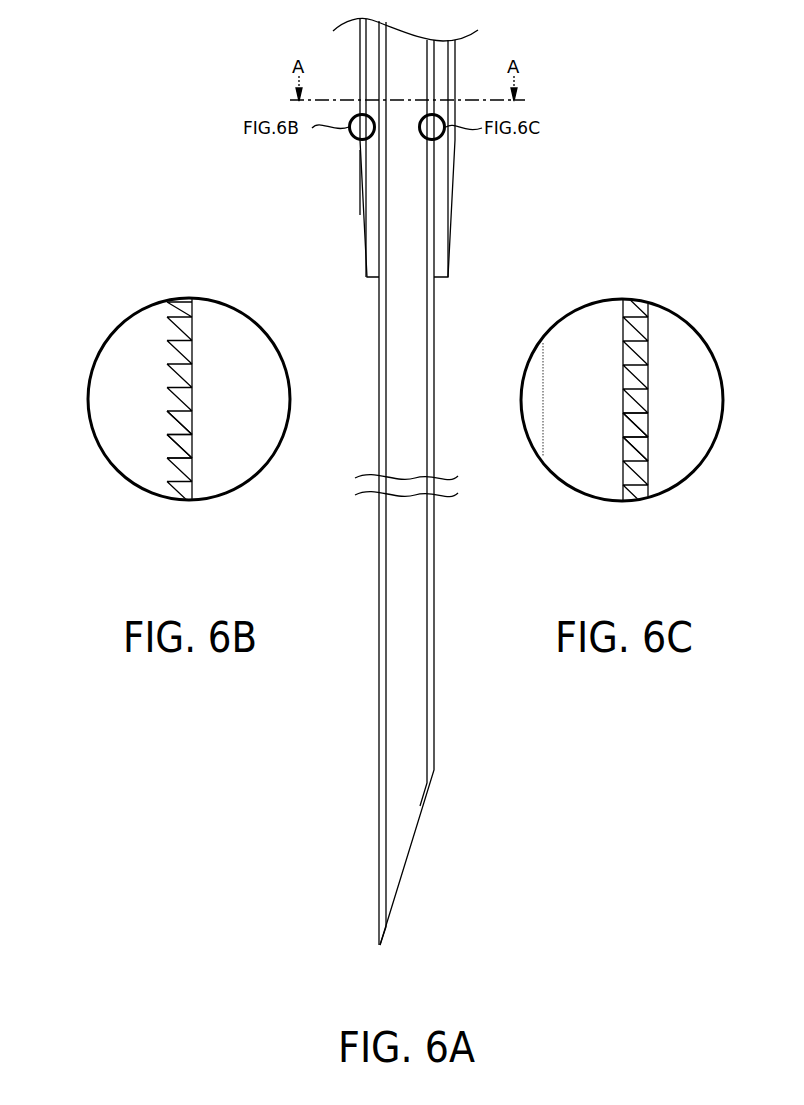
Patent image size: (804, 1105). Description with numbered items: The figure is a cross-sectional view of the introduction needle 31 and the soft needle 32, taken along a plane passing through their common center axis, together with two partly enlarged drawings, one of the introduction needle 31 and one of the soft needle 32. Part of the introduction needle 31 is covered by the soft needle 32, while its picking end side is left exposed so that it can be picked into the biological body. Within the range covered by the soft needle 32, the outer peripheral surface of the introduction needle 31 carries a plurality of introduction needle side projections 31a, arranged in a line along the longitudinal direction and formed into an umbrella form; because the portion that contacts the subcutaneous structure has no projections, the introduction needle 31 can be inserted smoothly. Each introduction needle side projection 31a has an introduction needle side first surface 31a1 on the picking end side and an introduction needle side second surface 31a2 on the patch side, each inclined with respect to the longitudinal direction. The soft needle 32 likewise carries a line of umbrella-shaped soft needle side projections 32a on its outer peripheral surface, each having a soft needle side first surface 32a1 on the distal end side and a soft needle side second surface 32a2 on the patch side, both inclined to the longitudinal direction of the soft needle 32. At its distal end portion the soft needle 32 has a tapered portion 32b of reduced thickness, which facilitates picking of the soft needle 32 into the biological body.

In FIG. 6A, the introduction needle 31 is at (432, 685).
In FIG. 6C, the introduction needle 31 is at (613, 322).
In FIG. 6C, the introduction needle side projections 31a is at (633, 360).
In FIG. 6C, the introduction needle side first surface 31a1 is at (643, 435).
In FIG. 6C, the introduction needle side second surface 31a2 is at (630, 425).
In FIG. 6A, the soft needle 32 is at (455, 62).
In FIG. 6B, the soft needle 32 is at (208, 460).
In FIG. 6C, the soft needle 32 is at (677, 373).
In FIG. 6B, the soft needle side projections 32a is at (177, 360).
In FIG. 6B, the soft needle side first surface 32a1 is at (177, 457).
In FIG. 6B, the soft needle side second surface 32a2 is at (173, 440).
In FIG. 6A, the tapered portion 32b is at (357, 213).